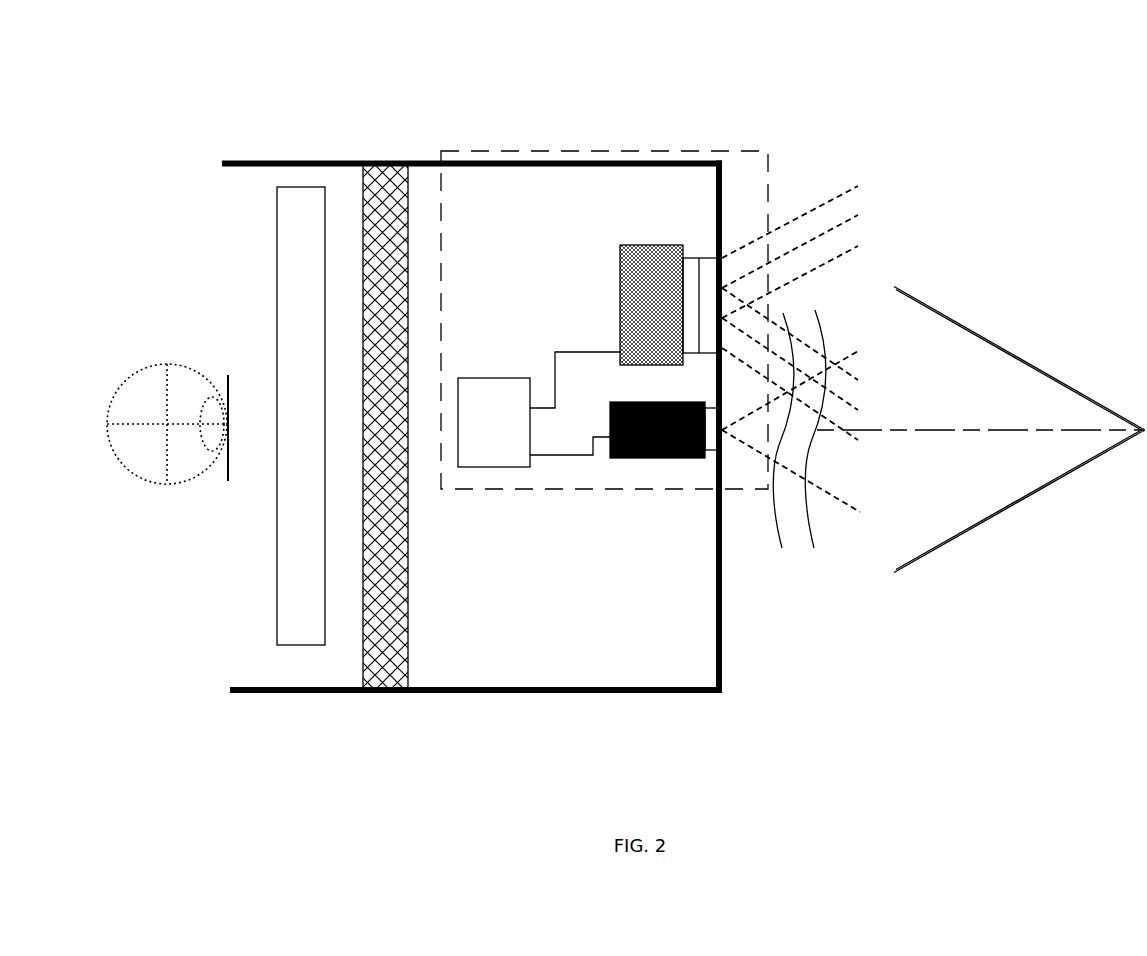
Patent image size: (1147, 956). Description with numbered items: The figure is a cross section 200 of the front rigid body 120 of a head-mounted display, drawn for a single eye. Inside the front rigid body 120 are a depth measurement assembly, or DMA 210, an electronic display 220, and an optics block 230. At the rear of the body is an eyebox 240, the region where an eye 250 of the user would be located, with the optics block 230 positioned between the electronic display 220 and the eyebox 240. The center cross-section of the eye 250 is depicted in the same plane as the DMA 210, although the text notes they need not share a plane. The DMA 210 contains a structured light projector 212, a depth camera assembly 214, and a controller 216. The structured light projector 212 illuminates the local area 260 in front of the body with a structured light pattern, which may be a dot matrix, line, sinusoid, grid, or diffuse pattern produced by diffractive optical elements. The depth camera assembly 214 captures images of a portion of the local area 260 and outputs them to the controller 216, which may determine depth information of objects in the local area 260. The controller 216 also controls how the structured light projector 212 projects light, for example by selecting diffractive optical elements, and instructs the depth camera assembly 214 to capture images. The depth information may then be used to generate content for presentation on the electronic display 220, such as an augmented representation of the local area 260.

The cross section 200 is at (158, 103).
The front rigid body 120 is at (687, 692).
The DMA 210 is at (493, 150).
The structured light projector 212 is at (652, 245).
The depth camera assembly 214 is at (662, 462).
The controller 216 is at (487, 443).
The electronic display 220 is at (363, 208).
The optics block 230 is at (313, 648).
The eyebox 240 is at (223, 375).
The eye 250 is at (137, 473).
The local area 260 is at (1002, 513).